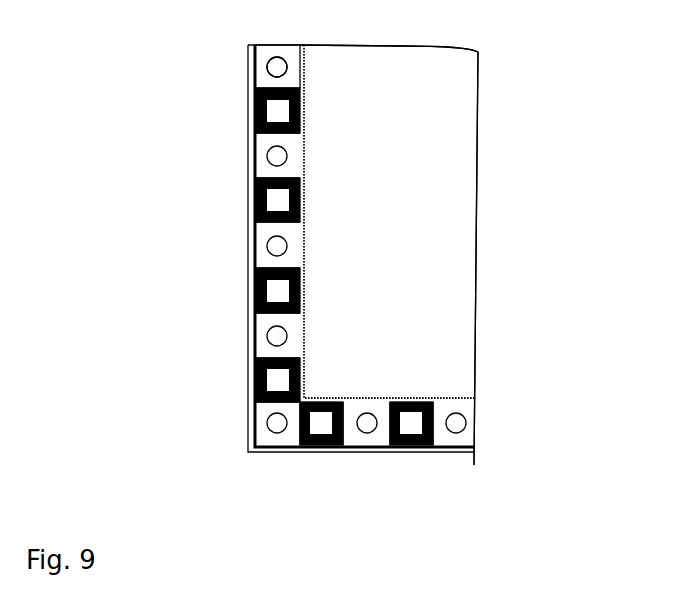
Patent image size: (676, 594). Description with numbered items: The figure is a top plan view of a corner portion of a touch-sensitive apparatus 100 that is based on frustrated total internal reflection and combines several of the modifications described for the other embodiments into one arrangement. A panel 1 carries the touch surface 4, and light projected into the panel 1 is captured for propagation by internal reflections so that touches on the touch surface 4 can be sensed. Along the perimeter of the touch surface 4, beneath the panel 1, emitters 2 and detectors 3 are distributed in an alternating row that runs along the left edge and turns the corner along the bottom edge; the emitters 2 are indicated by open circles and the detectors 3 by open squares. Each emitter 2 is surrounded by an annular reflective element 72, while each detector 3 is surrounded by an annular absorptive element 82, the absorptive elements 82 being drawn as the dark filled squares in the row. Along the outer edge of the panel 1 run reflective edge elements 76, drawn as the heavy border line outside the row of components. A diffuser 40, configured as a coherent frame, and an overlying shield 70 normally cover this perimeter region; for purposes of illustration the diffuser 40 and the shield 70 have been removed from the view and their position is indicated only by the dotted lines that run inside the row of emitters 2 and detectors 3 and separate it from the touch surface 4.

The touch-sensitive apparatus 100 is at (404, 262).
The panel 1 is at (478, 375).
The emitters 2 is at (273, 67).
The detectors 3 is at (299, 298).
The touch surface 4 is at (413, 231).
The diffuser 40 is at (303, 78).
The shield 70 is at (389, 221).
The annular reflective elements 72 is at (260, 55).
The reflective edge elements 76 is at (255, 300).
The annular absorptive elements 82 is at (298, 108).